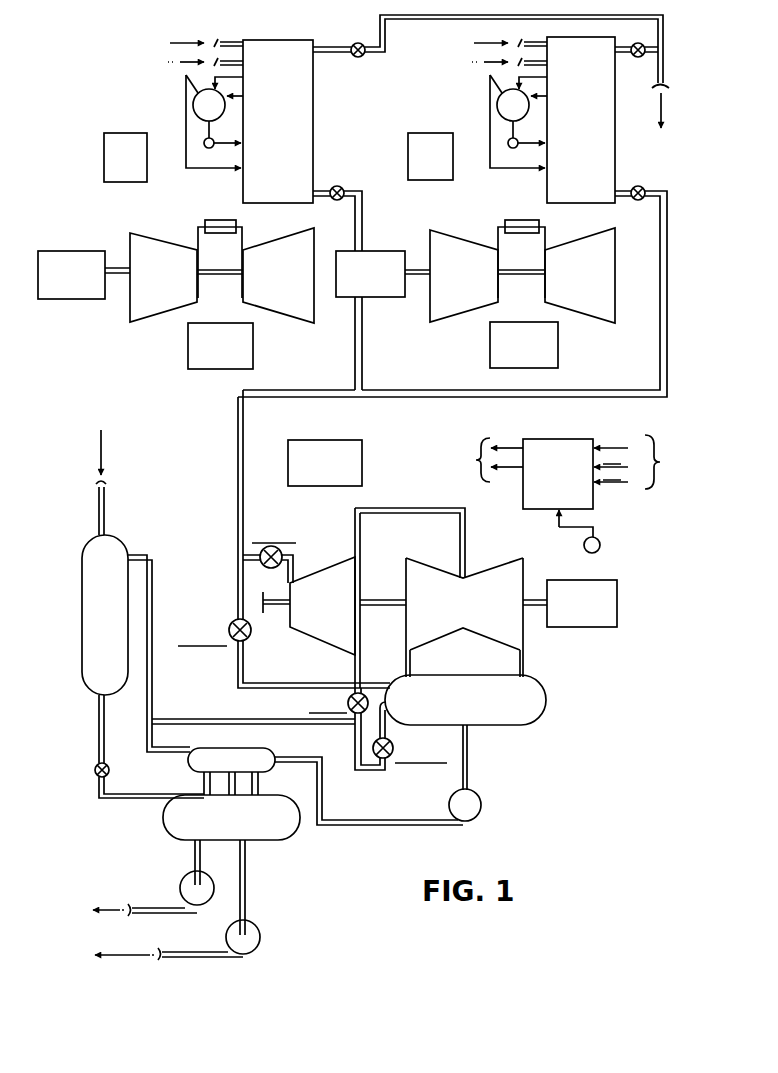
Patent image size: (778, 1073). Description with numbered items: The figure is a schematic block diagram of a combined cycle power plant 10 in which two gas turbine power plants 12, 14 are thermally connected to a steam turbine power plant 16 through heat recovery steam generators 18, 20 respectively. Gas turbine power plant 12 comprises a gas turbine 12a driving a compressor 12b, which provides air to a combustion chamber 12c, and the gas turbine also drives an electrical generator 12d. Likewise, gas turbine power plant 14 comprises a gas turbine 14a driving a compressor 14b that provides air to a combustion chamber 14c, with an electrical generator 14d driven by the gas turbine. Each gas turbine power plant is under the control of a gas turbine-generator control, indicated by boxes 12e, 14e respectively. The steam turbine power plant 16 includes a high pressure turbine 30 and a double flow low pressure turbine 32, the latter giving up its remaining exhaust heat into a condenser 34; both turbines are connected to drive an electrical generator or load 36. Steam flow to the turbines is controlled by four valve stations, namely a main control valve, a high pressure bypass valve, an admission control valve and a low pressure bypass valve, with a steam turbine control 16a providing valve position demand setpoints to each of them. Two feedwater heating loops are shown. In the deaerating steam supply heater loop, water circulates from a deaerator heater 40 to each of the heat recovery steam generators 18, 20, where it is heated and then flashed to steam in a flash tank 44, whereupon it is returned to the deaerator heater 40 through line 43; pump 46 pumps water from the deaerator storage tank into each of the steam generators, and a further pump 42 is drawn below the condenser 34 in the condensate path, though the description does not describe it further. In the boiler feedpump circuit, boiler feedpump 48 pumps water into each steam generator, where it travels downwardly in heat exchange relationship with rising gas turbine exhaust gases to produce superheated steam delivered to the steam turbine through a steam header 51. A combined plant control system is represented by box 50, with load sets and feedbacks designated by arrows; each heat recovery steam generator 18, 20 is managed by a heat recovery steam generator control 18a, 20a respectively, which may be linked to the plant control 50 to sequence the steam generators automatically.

The combined cycle power plant 10 is at (68, 403).
The gas turbine power plant 12 is at (176, 278).
The gas turbine 12a is at (278, 275).
The compressor 12b is at (163, 277).
The combustion chamber 12c is at (223, 220).
The electrical generator 12d is at (71, 275).
The gas turbine-generator control 12e is at (220, 346).
The gas turbine power plant 14 is at (475, 278).
The gas turbine 14a is at (580, 275).
The compressor 14b is at (464, 276).
The combustion chamber 14c is at (526, 220).
The electrical generator 14d is at (370, 274).
The gas turbine-generator control 14e is at (524, 345).
The steam turbine power plant 16 is at (440, 598).
The steam turbine control 16a is at (325, 463).
The heat recovery steam generator 18 is at (349, 137).
The HRSG control 18a is at (125, 157).
The heat recovery steam generator 20 is at (641, 137).
The HRSG control 20a is at (430, 156).
The high pressure turbine 30 is at (309, 606).
The double flow low pressure turbine 32 is at (464, 617).
The condenser 34 is at (427, 722).
The electrical generator or load 36 is at (582, 603).
The deaerator heater 40 is at (147, 785).
The condensate pump 42 is at (480, 811).
The line 43 is at (150, 690).
The flash tank 44 is at (143, 609).
The pump 46 is at (258, 948).
The boiler feedpump 48 is at (182, 880).
The combined plant control system 50 is at (568, 492).
The steam header 51 is at (237, 480).